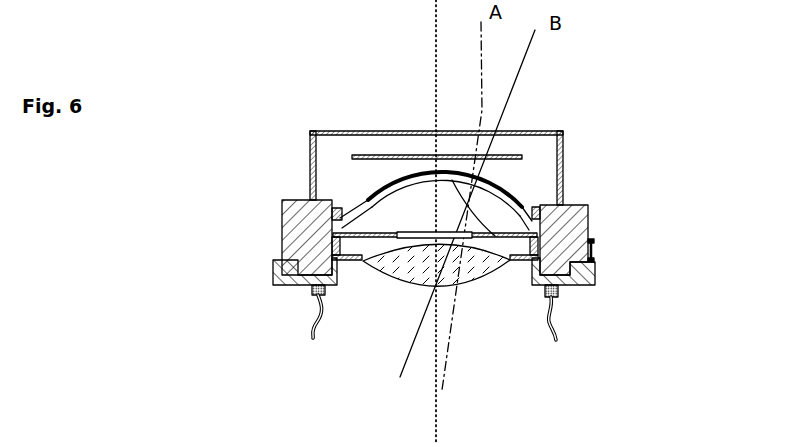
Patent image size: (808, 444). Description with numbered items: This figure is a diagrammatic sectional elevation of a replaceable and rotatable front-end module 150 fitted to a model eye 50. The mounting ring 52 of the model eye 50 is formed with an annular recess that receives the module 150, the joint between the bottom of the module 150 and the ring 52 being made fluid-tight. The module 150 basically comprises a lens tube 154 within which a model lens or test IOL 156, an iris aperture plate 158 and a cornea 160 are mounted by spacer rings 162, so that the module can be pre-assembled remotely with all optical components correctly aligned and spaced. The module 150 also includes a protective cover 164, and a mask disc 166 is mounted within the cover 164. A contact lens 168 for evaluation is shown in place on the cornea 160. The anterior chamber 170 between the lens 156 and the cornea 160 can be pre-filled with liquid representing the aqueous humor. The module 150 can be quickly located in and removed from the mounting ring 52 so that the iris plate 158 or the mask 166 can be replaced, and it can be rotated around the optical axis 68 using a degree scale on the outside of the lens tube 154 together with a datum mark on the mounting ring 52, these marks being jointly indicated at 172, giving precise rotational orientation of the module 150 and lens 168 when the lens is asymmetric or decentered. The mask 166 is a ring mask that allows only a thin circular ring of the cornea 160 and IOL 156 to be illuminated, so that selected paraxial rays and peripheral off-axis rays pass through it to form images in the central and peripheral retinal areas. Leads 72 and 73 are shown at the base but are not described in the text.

The model eye 50 is at (124, 277).
The mounting ring 52 is at (280, 266).
The optical axis 68 is at (436, 2).
The lead 72 is at (311, 338).
The lead 73 is at (560, 338).
The front-end module 150 is at (688, 130).
The lens tube 154 is at (575, 236).
The model lens or test IOL 156 is at (462, 280).
The iris aperture plate 158 is at (500, 214).
The cornea 160 is at (368, 202).
The spacer rings 162 is at (333, 213).
The protective cover 164 is at (568, 152).
The mask disc 166 is at (372, 154).
The contact lens 168 is at (380, 187).
The anterior chamber 170 is at (395, 228).
The degree scale and datum mark 172 is at (596, 260).